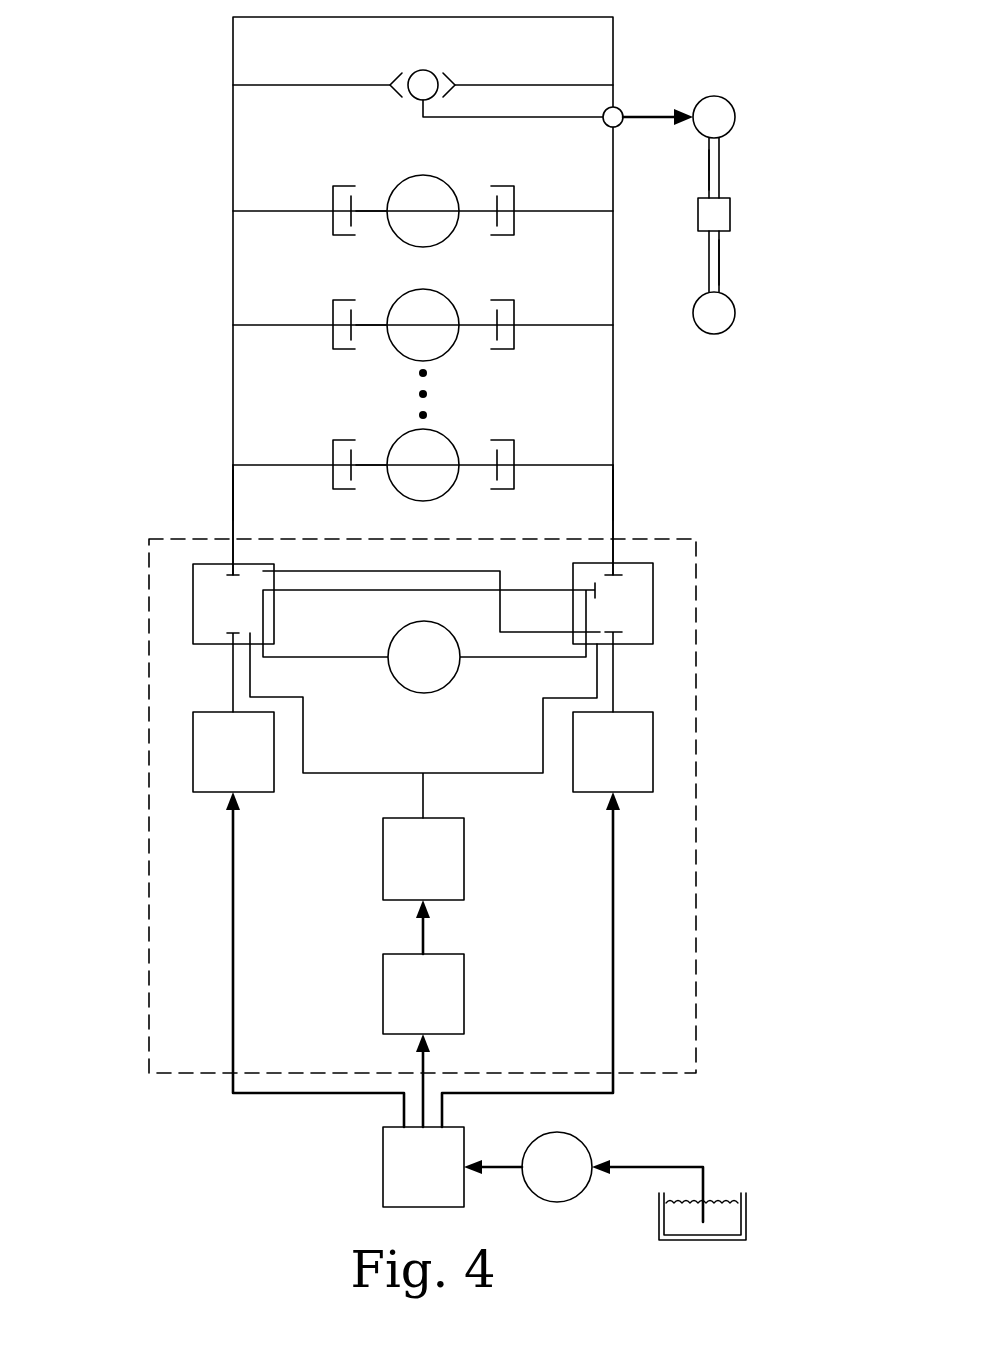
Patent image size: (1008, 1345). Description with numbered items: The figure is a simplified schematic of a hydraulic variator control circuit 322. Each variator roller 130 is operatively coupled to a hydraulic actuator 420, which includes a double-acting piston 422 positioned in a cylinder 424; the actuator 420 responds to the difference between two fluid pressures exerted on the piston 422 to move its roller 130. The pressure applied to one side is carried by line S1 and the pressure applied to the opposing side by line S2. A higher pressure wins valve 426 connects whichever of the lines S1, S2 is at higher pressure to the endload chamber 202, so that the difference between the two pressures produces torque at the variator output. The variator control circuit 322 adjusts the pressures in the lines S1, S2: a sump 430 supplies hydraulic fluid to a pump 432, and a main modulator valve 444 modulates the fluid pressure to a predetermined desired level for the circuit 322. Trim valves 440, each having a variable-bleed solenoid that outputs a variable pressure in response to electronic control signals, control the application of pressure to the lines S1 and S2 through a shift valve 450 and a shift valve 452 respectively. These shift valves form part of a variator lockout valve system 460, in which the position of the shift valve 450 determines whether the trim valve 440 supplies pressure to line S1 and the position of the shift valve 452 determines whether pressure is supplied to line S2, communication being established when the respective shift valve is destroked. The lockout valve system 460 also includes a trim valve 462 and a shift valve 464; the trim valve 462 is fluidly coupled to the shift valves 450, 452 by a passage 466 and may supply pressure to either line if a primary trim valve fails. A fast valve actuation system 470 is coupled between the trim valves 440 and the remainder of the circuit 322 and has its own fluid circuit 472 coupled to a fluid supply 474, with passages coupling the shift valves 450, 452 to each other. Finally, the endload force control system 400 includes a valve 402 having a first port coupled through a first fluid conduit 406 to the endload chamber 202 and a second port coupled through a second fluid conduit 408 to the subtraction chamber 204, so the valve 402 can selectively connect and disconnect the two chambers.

The variator control circuit 322 is at (150, 102).
The higher pressure wins valve 426 is at (453, 72).
The variator roller 130 is at (441, 180).
The hydraulic actuator 420 is at (333, 229).
The double-acting piston 422 is at (372, 208).
The cylinder 424 is at (514, 229).
The line S1 is at (233, 502).
The line S2 is at (613, 502).
The endload force control system 400 is at (745, 215).
The endload chamber 202 is at (718, 96).
The first fluid conduit 406 is at (709, 170).
The valve 402 is at (730, 214).
The second fluid conduit 408 is at (719, 259).
The subtraction chamber 204 is at (716, 334).
The variator lockout valve system 460 is at (696, 578).
The shift valve 450 is at (216, 619).
The shift valve 452 is at (596, 619).
The fluid circuit 472 is at (307, 608).
The fast valve actuation system 470 is at (497, 683).
The fluid supply 474 is at (407, 673).
The passage 466 is at (505, 773).
The trim valve 440 is at (216, 768).
The trim valve 462 is at (406, 876).
The shift valve 464 is at (406, 1009).
The main modulator valve 444 is at (406, 1183).
The pump 432 is at (540, 1183).
The sump 430 is at (746, 1218).